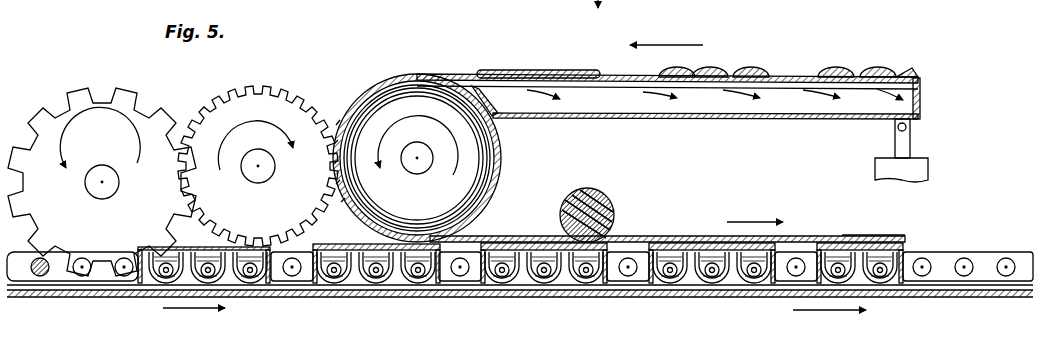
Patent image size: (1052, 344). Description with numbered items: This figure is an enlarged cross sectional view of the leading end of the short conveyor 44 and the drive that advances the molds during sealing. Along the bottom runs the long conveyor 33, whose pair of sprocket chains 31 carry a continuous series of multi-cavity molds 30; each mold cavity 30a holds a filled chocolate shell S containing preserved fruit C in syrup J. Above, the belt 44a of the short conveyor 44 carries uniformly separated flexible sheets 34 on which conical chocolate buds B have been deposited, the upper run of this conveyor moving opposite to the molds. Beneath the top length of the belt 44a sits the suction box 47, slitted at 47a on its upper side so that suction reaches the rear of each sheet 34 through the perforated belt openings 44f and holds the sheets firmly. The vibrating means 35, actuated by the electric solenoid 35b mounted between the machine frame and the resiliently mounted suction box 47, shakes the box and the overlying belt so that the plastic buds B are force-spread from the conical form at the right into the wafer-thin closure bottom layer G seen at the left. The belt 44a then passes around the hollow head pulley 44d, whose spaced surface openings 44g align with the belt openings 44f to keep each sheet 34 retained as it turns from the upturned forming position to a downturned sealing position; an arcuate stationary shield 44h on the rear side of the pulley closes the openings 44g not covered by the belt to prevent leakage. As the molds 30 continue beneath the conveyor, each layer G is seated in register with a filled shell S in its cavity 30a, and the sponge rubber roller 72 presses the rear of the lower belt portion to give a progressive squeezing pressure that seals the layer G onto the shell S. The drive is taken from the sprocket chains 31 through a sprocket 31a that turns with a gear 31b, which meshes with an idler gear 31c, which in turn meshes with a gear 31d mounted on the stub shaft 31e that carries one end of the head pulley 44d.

The mold 30 is at (355, 272).
The mold cavity 30a is at (697, 282).
The sprocket chain 31 is at (122, 277).
The sprocket 31a is at (43, 148).
The gear 31b is at (163, 130).
The idler gear 31c is at (268, 100).
The gear 31d is at (328, 157).
The stub shaft 31e is at (414, 165).
The long conveyor 33 is at (48, 303).
The flexible sheet 34 is at (817, 78).
The vibrating means 35 is at (935, 147).
The electric solenoid 35b is at (928, 170).
The short conveyor 44 is at (455, 70).
The belt 44a is at (606, 78).
The head pulley 44d is at (398, 108).
The belt openings 44f is at (890, 70).
The pulley surface openings 44g is at (493, 158).
The stationary shield 44h is at (502, 155).
The suction box 47 is at (683, 112).
The slit 47a is at (557, 91).
The sponge rubber roller 72 is at (597, 203).
The chocolate bud B is at (870, 72).
The preserved fruit C is at (310, 278).
The closure bottom chocolate layer G is at (352, 92).
The syrup J is at (483, 284).
The chocolate shell S is at (543, 277).